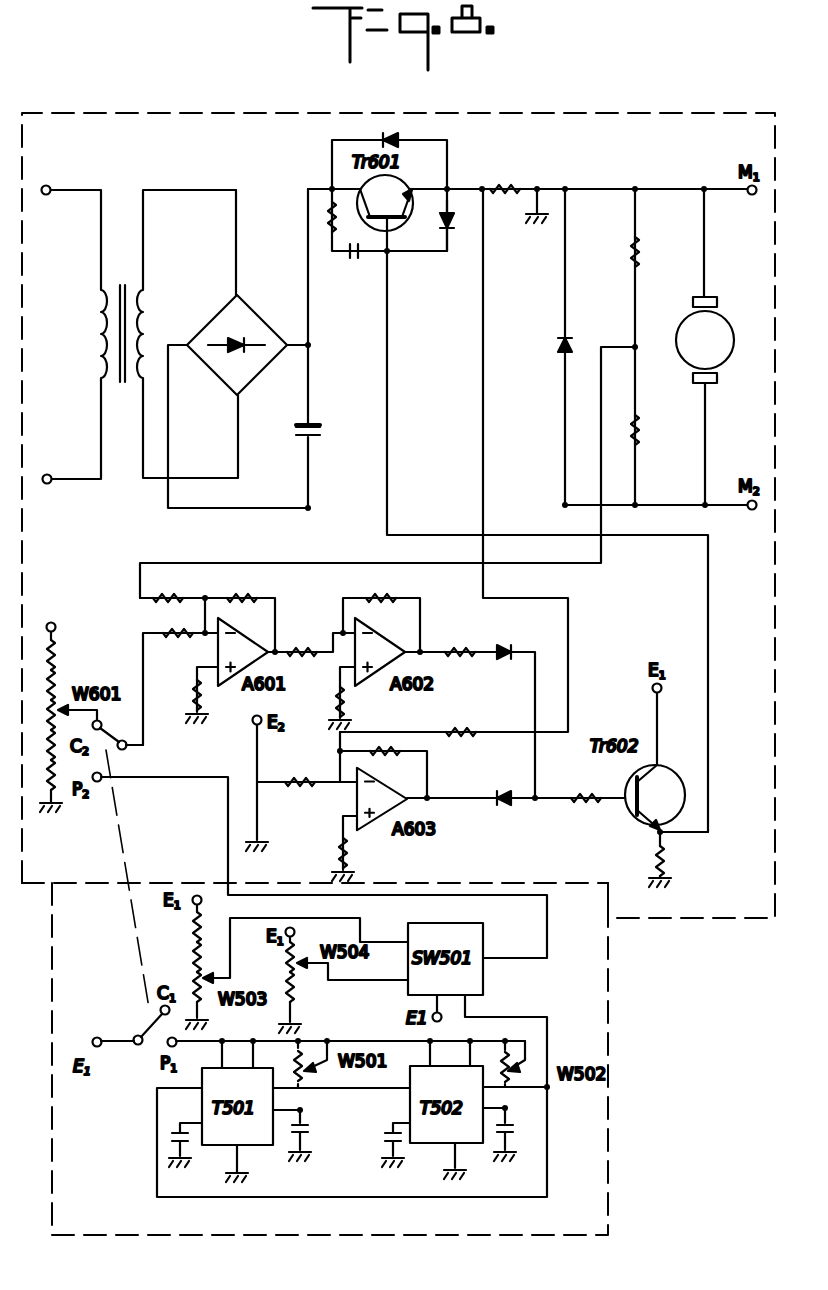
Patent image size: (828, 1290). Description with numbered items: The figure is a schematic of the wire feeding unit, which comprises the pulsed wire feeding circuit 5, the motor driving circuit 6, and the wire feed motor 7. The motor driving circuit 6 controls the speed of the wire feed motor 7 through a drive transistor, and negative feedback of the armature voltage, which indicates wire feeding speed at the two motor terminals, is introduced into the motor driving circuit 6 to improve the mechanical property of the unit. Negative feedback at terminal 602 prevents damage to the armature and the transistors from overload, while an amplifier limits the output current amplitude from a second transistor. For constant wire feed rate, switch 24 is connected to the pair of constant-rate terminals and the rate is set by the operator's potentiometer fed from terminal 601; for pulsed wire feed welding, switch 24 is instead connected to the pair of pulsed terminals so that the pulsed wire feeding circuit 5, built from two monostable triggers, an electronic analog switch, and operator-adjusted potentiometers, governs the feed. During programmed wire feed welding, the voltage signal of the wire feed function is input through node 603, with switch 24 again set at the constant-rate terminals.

The pulsed wire feeding circuit 5 is at (315, 1059).
The motor driving circuit 6 is at (398, 515).
The wire feed motor 7 is at (727, 323).
The switch 24 is at (124, 840).
The terminal 601 is at (53, 704).
The terminal 602 is at (588, 334).
The node 603 is at (484, 187).